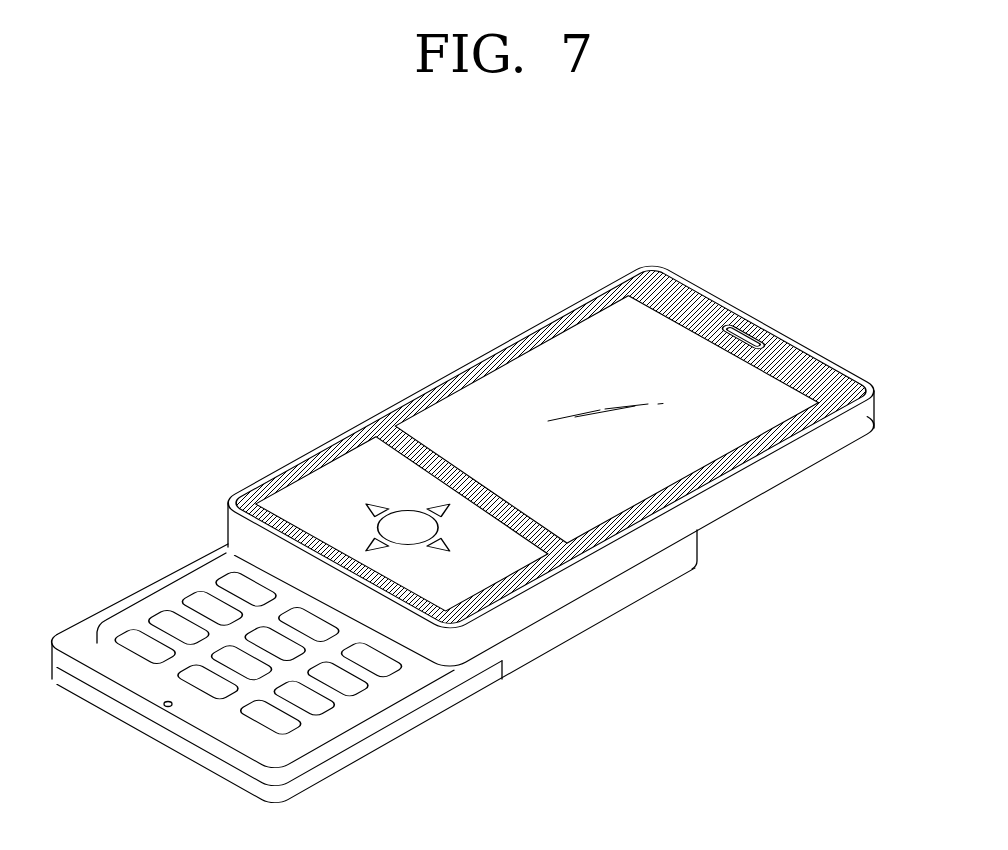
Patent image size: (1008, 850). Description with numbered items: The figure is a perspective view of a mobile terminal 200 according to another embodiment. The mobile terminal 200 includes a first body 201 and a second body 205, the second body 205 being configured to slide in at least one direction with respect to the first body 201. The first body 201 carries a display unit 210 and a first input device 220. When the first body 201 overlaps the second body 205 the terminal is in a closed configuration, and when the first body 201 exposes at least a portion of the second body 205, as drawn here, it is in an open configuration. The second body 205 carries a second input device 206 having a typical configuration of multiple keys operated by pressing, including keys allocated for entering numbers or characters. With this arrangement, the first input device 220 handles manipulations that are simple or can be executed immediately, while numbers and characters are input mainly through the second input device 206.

The mobile terminal 200 is at (337, 294).
The first body 201 is at (803, 478).
The second body 205 is at (548, 664).
The second input device 206 is at (163, 582).
The display unit 210 is at (512, 386).
The first input device 220 is at (346, 486).